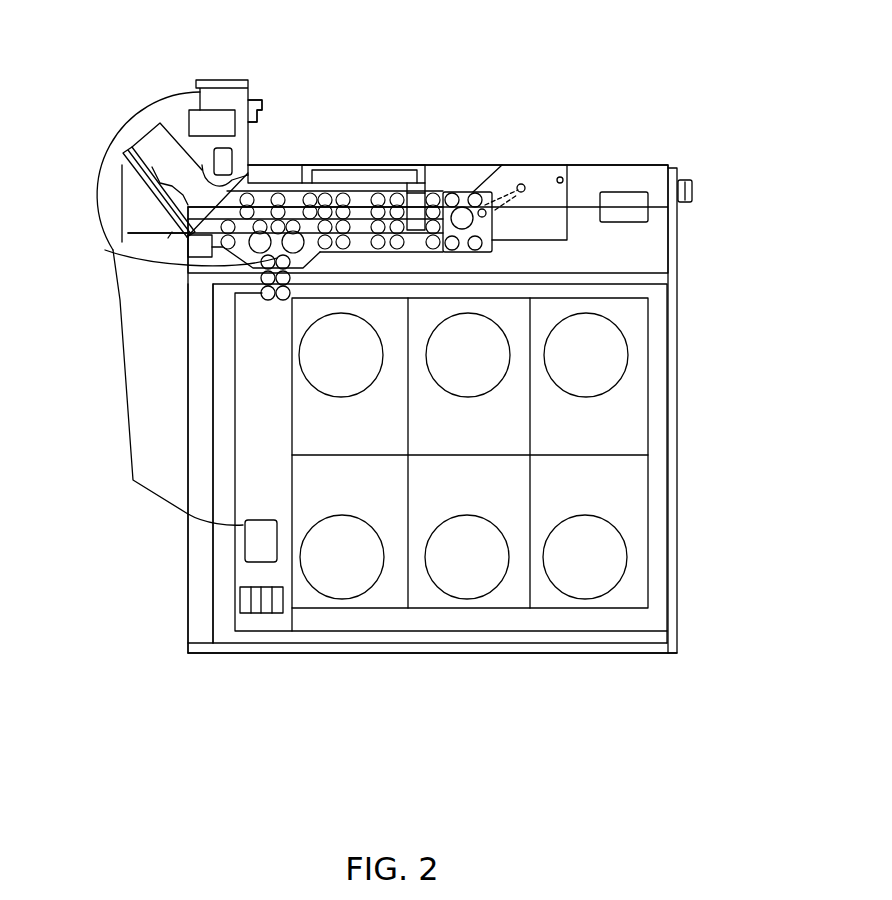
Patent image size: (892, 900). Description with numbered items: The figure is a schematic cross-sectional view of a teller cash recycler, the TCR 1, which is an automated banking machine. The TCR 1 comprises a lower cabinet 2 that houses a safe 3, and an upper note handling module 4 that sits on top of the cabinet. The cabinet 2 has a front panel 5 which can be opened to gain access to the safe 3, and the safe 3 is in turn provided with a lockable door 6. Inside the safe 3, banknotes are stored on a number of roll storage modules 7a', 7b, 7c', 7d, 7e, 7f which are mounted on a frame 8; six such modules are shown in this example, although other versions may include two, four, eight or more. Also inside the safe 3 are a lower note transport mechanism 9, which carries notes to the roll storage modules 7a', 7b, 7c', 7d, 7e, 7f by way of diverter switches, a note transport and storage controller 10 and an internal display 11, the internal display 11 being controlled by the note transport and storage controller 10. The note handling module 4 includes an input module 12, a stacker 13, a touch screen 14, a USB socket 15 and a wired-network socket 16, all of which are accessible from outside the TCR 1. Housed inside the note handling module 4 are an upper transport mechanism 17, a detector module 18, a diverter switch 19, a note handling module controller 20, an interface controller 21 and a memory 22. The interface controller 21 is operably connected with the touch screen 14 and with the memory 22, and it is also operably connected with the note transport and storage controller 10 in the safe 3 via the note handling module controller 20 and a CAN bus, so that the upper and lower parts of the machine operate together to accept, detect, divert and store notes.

The TCR 1 is at (752, 318).
The cabinet 2 is at (696, 640).
The safe 3 is at (573, 645).
The note handling module 4 is at (696, 93).
The front panel 5 is at (188, 545).
The lockable door 6 is at (218, 623).
The roll storage module 7a' is at (341, 378).
The roll storage module 7b is at (455, 394).
The roll storage module 7c' is at (586, 378).
The roll storage module 7d is at (350, 583).
The roll storage module 7e is at (469, 585).
The roll storage module 7f is at (610, 577).
The frame 8 is at (648, 414).
The lower note transport mechanism 9 is at (271, 297).
The note transport and storage controller 10 is at (188, 516).
The internal display 11 is at (255, 612).
The input module 12 is at (148, 132).
The stacker 13 is at (122, 199).
The touch screen 14 is at (220, 78).
The USB socket 15 is at (262, 103).
The wired-network socket 16 is at (683, 178).
The upper transport mechanism 17 is at (296, 200).
The detector module 18 is at (370, 175).
The diverter switch 19 is at (196, 266).
The note handling module controller 20 is at (603, 192).
The interface controller 21 is at (192, 110).
The memory 22 is at (228, 157).